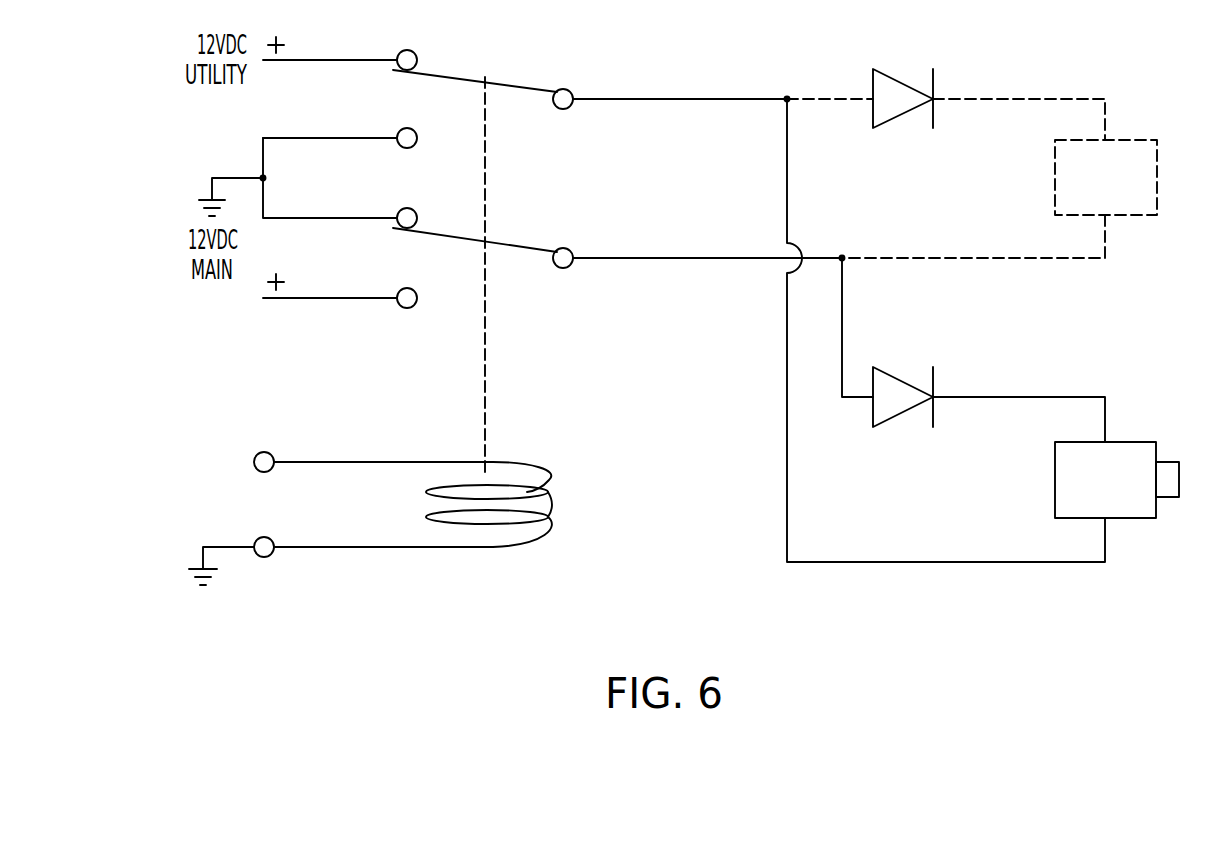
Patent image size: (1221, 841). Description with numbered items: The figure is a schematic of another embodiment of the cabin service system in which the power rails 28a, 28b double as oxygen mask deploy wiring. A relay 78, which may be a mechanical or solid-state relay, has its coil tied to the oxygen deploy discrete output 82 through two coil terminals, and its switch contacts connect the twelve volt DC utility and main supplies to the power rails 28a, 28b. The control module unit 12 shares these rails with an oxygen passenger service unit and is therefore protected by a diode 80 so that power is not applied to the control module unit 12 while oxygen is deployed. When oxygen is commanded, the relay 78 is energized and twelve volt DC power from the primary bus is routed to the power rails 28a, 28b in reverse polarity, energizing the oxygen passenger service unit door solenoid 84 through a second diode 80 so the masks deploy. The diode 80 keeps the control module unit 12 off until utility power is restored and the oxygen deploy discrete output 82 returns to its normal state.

The control module unit 12 is at (1133, 140).
The power rail 28a is at (662, 99).
The power rail 28b is at (662, 258).
The relay 78 is at (551, 503).
The diode 80 is at (893, 78).
The oxygen deploy discrete output 82 is at (268, 452).
The oxygen passenger service unit door solenoid 84 is at (1133, 442).